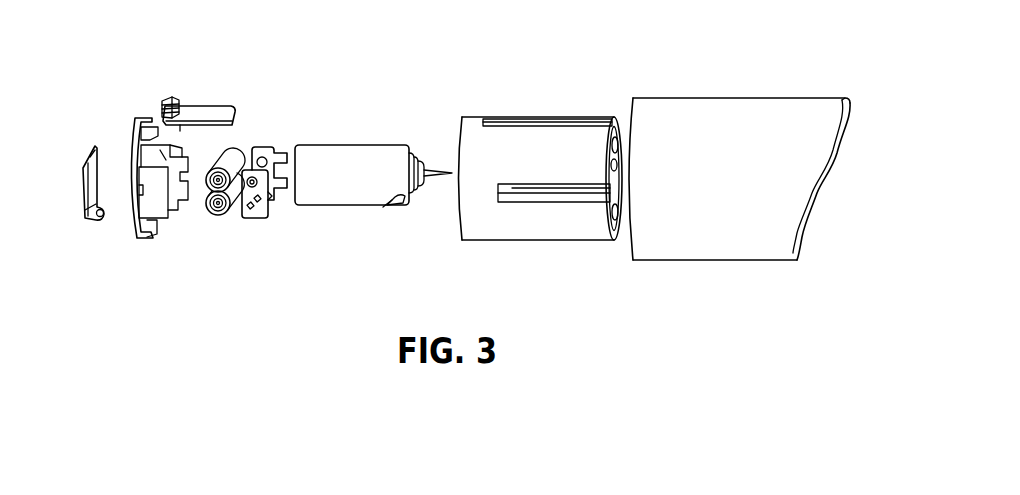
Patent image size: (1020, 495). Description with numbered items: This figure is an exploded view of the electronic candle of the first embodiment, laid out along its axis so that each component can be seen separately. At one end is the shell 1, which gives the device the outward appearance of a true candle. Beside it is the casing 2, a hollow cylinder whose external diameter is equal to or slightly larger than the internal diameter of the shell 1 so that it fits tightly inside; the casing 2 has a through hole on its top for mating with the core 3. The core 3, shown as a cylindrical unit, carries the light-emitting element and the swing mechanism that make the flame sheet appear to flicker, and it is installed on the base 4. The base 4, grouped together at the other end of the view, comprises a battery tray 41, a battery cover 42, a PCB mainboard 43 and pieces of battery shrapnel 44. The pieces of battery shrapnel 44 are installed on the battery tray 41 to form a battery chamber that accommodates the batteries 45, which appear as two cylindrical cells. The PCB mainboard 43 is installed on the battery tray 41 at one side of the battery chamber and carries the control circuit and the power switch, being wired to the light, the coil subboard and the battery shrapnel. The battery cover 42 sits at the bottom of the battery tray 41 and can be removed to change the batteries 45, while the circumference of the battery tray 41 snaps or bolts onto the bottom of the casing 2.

The shell 1 is at (675, 98).
The casing 2 is at (512, 118).
The core 3 is at (350, 145).
The base 4 is at (60, 18).
The battery tray 41 is at (147, 118).
The battery cover 42 is at (93, 147).
The PCB mainboard 43 is at (210, 108).
The pieces of battery shrapnel 44 is at (257, 147).
The batteries 45 is at (223, 220).